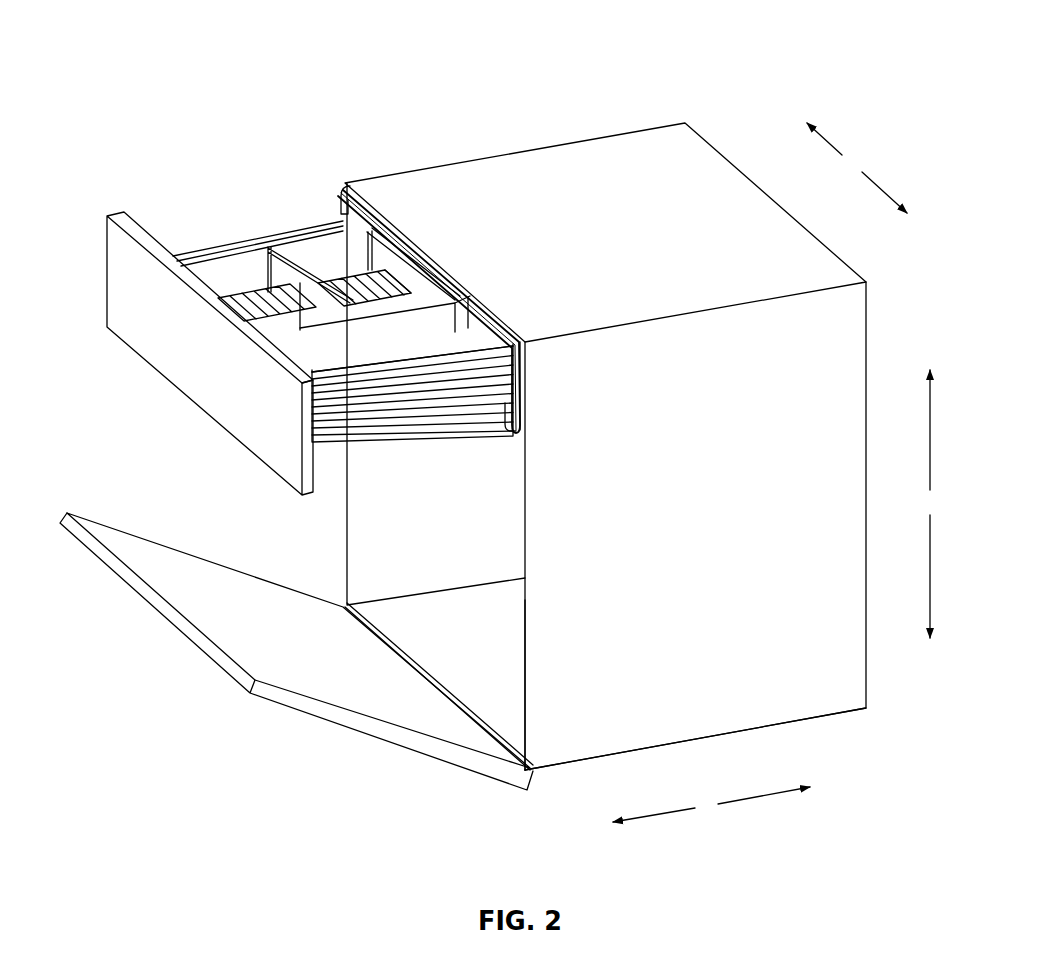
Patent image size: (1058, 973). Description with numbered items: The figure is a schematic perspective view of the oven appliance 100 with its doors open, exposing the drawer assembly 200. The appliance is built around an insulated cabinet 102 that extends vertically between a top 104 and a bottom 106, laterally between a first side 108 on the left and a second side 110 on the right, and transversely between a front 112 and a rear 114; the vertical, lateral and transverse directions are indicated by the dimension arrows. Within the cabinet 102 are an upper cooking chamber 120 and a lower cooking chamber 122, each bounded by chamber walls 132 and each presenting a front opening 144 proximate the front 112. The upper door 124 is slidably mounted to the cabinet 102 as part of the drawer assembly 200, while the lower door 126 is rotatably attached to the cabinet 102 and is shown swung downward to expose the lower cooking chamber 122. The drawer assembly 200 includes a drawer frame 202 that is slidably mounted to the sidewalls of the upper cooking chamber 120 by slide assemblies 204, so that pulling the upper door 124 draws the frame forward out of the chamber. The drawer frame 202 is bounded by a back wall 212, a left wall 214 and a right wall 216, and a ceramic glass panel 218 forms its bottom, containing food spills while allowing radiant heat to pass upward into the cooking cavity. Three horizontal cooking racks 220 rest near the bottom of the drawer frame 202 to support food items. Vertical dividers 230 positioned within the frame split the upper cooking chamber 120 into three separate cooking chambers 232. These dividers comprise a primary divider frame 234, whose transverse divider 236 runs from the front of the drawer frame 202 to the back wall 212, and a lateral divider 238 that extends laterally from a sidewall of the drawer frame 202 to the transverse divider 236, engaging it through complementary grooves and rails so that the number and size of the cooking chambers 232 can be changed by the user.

The oven appliance 100 is at (133, 75).
The cabinet 102 is at (848, 700).
The top 104 is at (715, 176).
The bottom 106 is at (828, 724).
The first side 108 is at (346, 536).
The second side 110 is at (835, 360).
The front 112 is at (524, 722).
The rear 114 is at (874, 668).
The upper cooking chamber 120 is at (511, 430).
The lower cooking chamber 122 is at (452, 648).
The upper door 124 is at (125, 328).
The lower door 126 is at (208, 666).
The chamber walls 132 is at (350, 183).
The front opening 144 is at (478, 684).
The drawer assembly 200 is at (176, 208).
The drawer frame 202 is at (448, 385).
The slide assemblies 204 is at (527, 389).
The back wall 212 is at (487, 335).
The left wall 214 is at (240, 258).
The right wall 216 is at (516, 350).
The ceramic glass panel 218 is at (396, 278).
The horizontal cooking racks 220 is at (350, 272).
The vertical dividers 230 is at (424, 312).
The cooking chambers 232 is at (378, 345).
The primary divider frame 234 is at (220, 281).
The transverse divider 236 is at (302, 357).
The lateral divider 238 is at (300, 264).